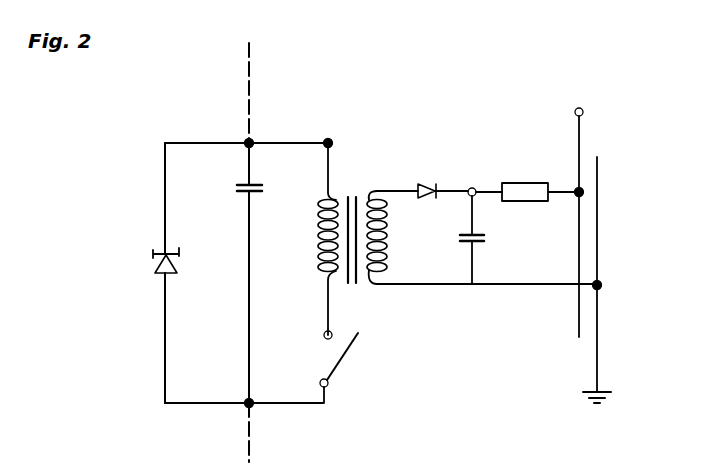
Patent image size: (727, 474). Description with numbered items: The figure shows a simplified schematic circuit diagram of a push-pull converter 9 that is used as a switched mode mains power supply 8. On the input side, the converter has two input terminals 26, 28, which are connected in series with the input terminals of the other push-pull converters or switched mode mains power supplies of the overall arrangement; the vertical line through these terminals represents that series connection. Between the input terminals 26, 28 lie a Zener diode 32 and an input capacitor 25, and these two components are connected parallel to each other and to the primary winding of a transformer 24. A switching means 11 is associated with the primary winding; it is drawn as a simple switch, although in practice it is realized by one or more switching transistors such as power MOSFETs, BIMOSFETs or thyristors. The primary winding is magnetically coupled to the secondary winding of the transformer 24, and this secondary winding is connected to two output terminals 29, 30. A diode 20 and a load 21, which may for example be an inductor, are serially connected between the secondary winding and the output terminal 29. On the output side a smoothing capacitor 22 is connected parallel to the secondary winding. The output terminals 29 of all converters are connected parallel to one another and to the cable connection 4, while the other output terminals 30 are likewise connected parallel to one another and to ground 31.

The cable connection 4 is at (583, 146).
The switched mode mains power supply 8 is at (485, 108).
The push-pull converter 9 is at (484, 100).
The switching means 11 is at (344, 366).
The diode 20 is at (427, 183).
The load 21 is at (516, 182).
The smoothing capacitor 22 is at (486, 238).
The transformer 24 is at (350, 192).
The input capacitor 25 is at (237, 188).
The input terminal 26 is at (247, 142).
The input terminal 28 is at (247, 402).
The output terminal 29 is at (584, 188).
The output terminal 30 is at (603, 280).
The ground 31 is at (612, 393).
The Zener diode 32 is at (155, 264).